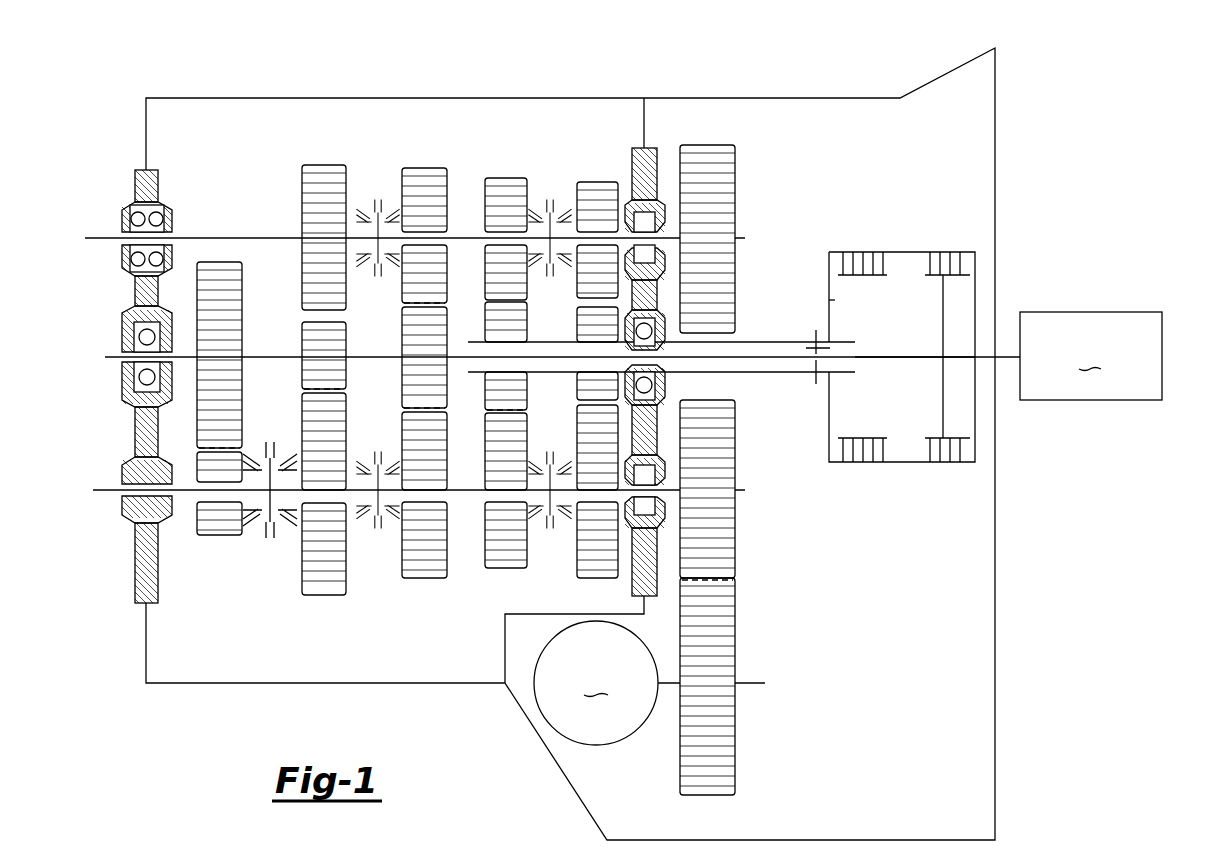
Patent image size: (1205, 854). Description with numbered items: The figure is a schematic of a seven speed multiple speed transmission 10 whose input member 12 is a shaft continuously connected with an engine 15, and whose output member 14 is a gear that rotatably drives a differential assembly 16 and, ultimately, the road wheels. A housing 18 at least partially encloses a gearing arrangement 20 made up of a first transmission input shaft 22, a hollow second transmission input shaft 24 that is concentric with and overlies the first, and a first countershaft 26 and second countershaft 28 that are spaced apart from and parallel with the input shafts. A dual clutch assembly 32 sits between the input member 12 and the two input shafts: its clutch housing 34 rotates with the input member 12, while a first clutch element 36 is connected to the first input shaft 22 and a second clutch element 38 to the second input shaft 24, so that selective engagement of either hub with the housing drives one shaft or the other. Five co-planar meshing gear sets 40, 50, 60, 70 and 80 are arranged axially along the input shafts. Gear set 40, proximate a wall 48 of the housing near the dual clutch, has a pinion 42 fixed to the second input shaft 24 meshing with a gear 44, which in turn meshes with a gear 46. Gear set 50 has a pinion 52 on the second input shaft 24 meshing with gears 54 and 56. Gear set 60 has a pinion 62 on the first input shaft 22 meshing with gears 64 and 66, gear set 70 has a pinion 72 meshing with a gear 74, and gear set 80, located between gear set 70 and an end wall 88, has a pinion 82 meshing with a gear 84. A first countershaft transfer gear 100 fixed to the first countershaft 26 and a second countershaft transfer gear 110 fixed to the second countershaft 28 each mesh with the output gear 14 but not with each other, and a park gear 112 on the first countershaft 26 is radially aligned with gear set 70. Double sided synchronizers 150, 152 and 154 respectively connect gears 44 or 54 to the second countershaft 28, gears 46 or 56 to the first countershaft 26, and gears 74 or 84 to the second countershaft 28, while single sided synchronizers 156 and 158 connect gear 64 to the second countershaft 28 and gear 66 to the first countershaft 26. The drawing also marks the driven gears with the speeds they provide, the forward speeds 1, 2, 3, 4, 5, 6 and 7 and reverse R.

The multiple speed transmission 10 is at (1006, 90).
The input member 12 is at (1000, 354).
The output member 14 is at (705, 795).
The engine 15 is at (1091, 356).
The differential assembly 16 is at (596, 683).
The housing 18 is at (810, 98).
The gearing arrangement 20 is at (268, 160).
The first transmission input shaft 22 is at (895, 360).
The second transmission input shaft 24 is at (765, 342).
The first countershaft 26 is at (745, 238).
The second countershaft 28 is at (745, 490).
The dual clutch assembly 32 is at (888, 236).
The clutch housing 34 is at (880, 462).
The first clutch element 36 is at (943, 335).
The second clutch element 38 is at (829, 305).
The co-planar gear set 40 is at (598, 180).
The pinion 42 is at (577, 333).
The gear 44 is at (577, 421).
The gear 46 is at (601, 176).
The wall 48 is at (640, 148).
The co-planar gear set 50 is at (480, 175).
The pinion 52 is at (527, 310).
The gear 54 is at (527, 448).
The gear 56 is at (511, 175).
The co-planar gear set 60 is at (400, 170).
The pinion 62 is at (402, 340).
The gear 64 is at (402, 420).
The gear 66 is at (429, 171).
The co-planar gear set 70 is at (340, 605).
The pinion 72 is at (302, 338).
The gear 74 is at (302, 420).
The co-planar gear set 80 is at (258, 540).
The pinion 82 is at (218, 262).
The gear 84 is at (219, 559).
The end wall 88 is at (135, 182).
The first countershaft transfer gear 100 is at (700, 145).
The second countershaft transfer gear 110 is at (735, 419).
The park gear 112 is at (320, 165).
The synchronizer 150 is at (552, 528).
The synchronizer 152 is at (551, 206).
The synchronizer 154 is at (271, 538).
The synchronizer 156 is at (378, 528).
The synchronizer 158 is at (378, 206).
The first gear 1 is at (324, 567).
The second gear 2 is at (597, 560).
The third gear 3 is at (432, 168).
The fourth gear 4 is at (512, 178).
The fifth gear 5 is at (424, 562).
The sixth gear 6 is at (506, 555).
The seventh gear 7 is at (220, 535).
The reverse gear R is at (600, 182).